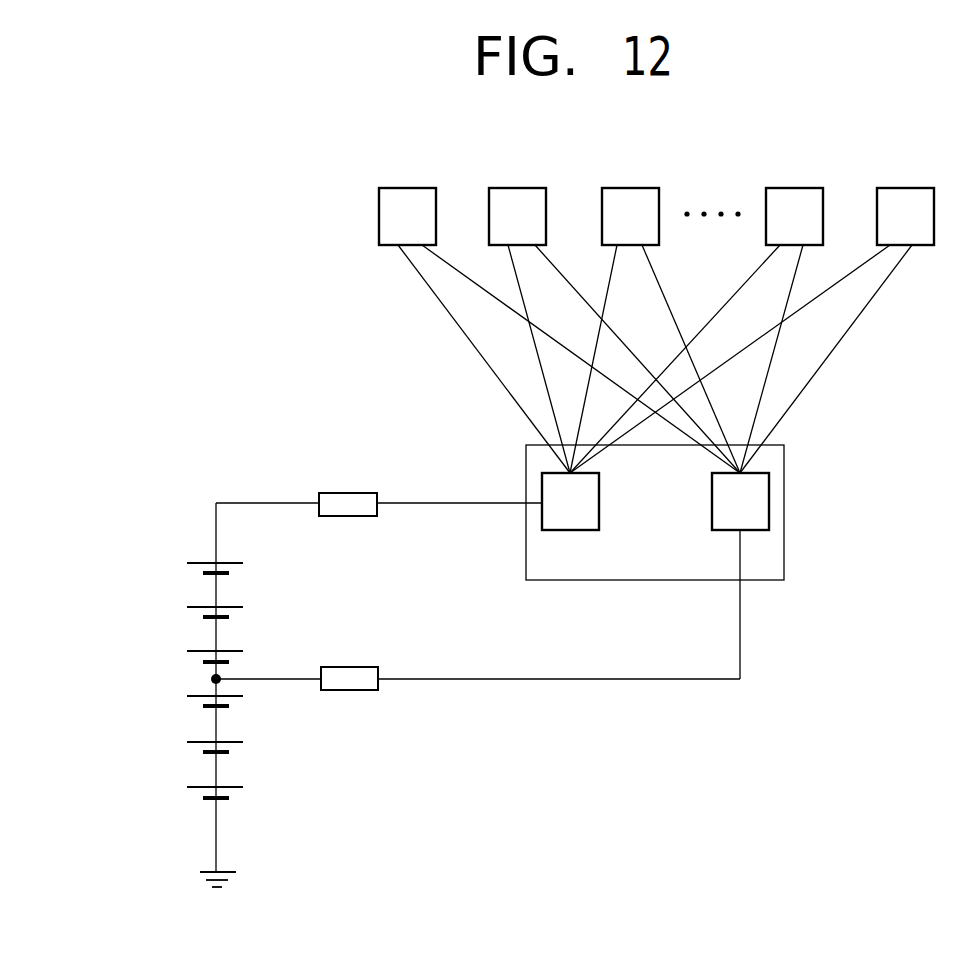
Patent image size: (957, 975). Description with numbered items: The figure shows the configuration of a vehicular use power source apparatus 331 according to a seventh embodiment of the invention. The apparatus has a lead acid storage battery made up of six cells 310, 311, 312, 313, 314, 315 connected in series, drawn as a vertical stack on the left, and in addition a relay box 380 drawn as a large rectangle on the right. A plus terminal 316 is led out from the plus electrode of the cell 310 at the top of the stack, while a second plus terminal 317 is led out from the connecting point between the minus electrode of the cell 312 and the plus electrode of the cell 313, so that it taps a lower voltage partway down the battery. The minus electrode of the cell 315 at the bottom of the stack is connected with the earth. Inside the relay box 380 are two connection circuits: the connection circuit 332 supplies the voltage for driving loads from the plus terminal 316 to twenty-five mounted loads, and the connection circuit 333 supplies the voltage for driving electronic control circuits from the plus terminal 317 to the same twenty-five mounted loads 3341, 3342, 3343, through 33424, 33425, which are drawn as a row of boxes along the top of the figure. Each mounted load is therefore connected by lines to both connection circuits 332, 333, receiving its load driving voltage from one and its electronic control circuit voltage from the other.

The vehicular use power source apparatus 331 is at (225, 285).
The mounted load 3341 is at (408, 187).
The mounted load 3342 is at (518, 187).
The mounted load 3343 is at (631, 187).
The mounted load 33424 is at (795, 187).
The mounted load 33425 is at (906, 187).
The relay box 380 is at (786, 534).
The connection circuit 332 is at (570, 531).
The connection circuit 333 is at (718, 531).
The plus terminal 316 is at (351, 491).
The plus terminal 317 is at (352, 665).
The cell 310 is at (181, 570).
The cell 311 is at (181, 614).
The cell 312 is at (181, 659).
The cell 313 is at (181, 703).
The cell 314 is at (181, 749).
The cell 315 is at (181, 795).